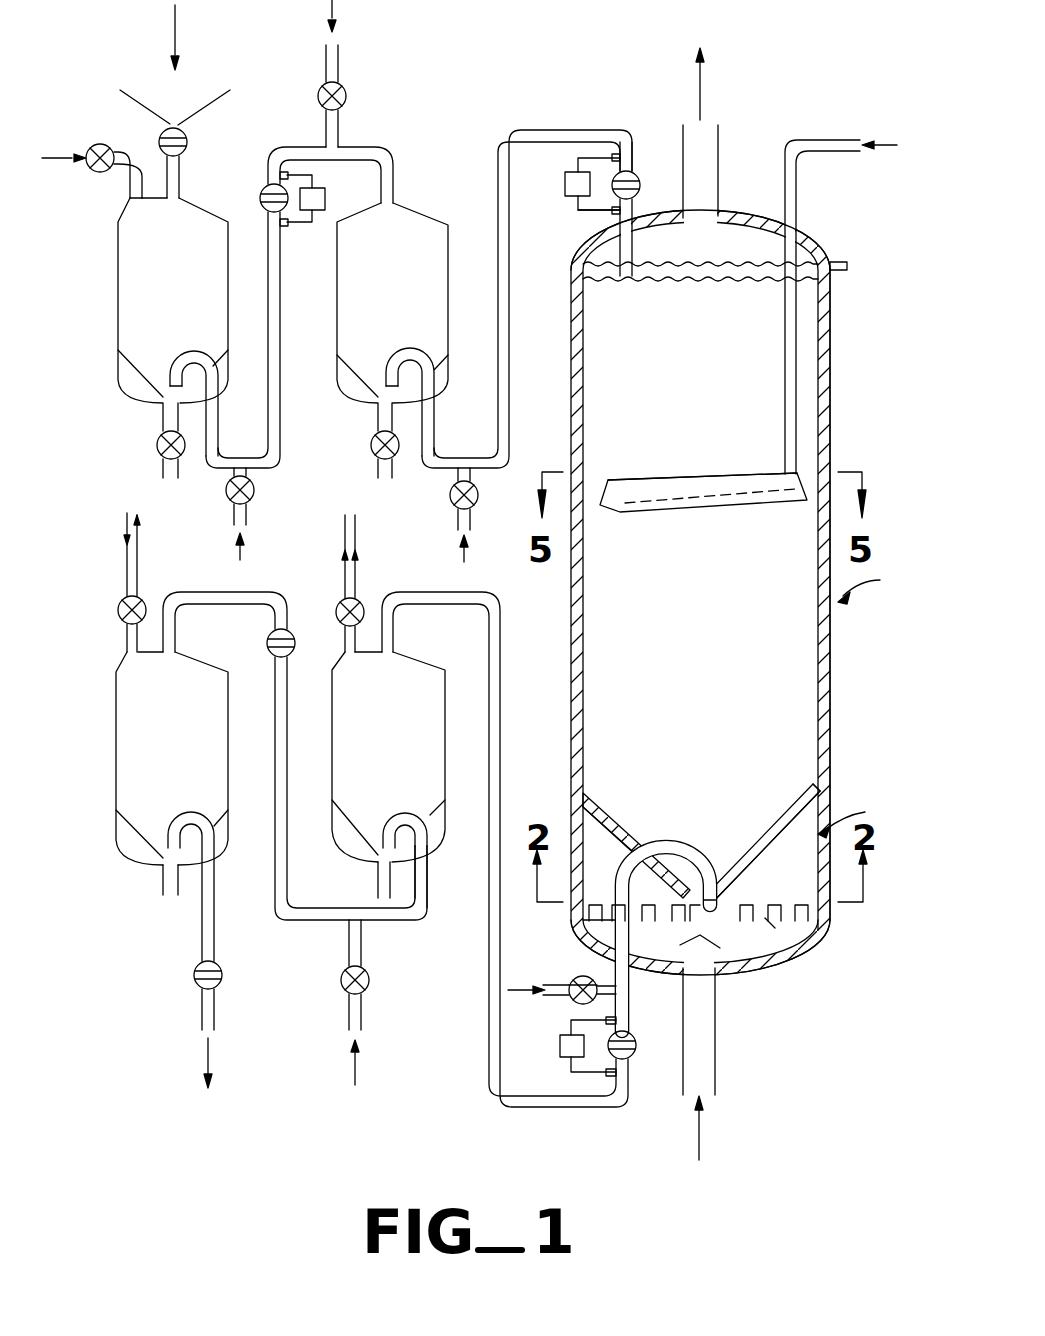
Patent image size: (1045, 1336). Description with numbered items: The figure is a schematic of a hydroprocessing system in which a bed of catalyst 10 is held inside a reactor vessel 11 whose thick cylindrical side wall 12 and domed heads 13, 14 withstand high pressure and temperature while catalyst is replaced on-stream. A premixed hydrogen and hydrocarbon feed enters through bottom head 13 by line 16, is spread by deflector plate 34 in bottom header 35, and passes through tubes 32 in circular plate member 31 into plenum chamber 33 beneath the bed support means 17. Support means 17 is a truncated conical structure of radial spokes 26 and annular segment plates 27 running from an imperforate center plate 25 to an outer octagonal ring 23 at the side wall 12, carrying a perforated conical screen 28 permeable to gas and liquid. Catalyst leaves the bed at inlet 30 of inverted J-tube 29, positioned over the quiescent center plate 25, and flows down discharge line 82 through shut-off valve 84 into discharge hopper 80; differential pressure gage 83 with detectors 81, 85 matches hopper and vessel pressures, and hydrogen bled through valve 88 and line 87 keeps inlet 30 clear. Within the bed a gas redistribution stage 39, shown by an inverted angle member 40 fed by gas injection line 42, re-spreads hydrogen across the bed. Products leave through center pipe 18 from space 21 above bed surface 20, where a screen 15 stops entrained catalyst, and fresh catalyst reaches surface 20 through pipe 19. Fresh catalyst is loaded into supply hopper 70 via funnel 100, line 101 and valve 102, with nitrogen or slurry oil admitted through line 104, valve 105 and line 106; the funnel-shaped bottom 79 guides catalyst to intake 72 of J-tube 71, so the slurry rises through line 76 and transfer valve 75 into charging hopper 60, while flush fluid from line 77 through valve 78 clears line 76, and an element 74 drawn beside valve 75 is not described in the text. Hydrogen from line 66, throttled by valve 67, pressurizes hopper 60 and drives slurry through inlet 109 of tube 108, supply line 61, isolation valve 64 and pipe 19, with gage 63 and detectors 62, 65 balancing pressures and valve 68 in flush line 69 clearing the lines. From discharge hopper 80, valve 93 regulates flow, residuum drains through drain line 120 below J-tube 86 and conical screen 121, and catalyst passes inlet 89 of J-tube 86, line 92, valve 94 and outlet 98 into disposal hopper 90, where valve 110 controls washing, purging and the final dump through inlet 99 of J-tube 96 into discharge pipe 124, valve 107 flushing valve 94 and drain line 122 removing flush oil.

The catalyst bed 10 is at (718, 645).
The reactor vessel 11 is at (875, 582).
The cylindrical side wall 12 is at (832, 672).
The bottom head 13 is at (765, 975).
The domed head 14 is at (815, 237).
The screen 15 is at (737, 268).
The feed line 16 is at (720, 1050).
The bed support means 17 is at (854, 812).
The center pipe 18 is at (722, 148).
The catalyst addition pipe 19 is at (633, 244).
The bed surface 20 is at (676, 284).
The disengaging space 21 is at (725, 253).
The outer octagonal ring 23 is at (820, 805).
The imperforate center plate 25 is at (695, 918).
The radial spoke members 26 is at (778, 860).
The segment plates 27 is at (598, 812).
The perforated screen 28 is at (770, 835).
The inverted J-tube 29 is at (655, 848).
The J-tube inlet 30 is at (709, 888).
The circular plate member 31 is at (818, 940).
The tubes 32 is at (778, 922).
The plenum chamber 33 is at (620, 871).
The deflector plate 34 is at (722, 953).
The bottom header 35 is at (665, 953).
The gas redistribution stage 39 is at (748, 470).
The inverted shed 40 is at (645, 478).
The gas injection line 42 is at (800, 190).
The charging hopper 60 is at (420, 210).
The supply line 61 is at (547, 128).
The pressure detector 62 is at (618, 140).
The differential pressure gage 63 is at (565, 178).
The isolation valve 64 is at (638, 176).
The pressure detector 65 is at (615, 212).
The hydrogen line 66 is at (340, 68).
The hydrogen valve 67 is at (348, 96).
The flush valve 68 is at (450, 497).
The flush line 69 is at (470, 516).
The supply hopper 70 is at (118, 292).
The J-tube 71 is at (188, 360).
The J-tube inlet 72 is at (168, 382).
The controller 74 is at (325, 200).
The transfer valve 75 is at (266, 215).
The transfer line 76 is at (280, 300).
The flush fluid line 77 is at (246, 515).
The flush valve 78 is at (226, 497).
The funnel-shaped bottom 79 is at (122, 372).
The discharge hopper 80 is at (448, 712).
The pressure detector 81 is at (571, 1023).
The discharge line 82 is at (502, 708).
The differential pressure gage 83 is at (560, 1055).
The transfer valve 84 is at (636, 1038).
The pressure detector 85 is at (600, 1076).
The J-tube 86 is at (402, 815).
The flush line 87 is at (578, 976).
The bleed valve 88 is at (560, 998).
The J-tube inlet 89 is at (372, 840).
The disposal hopper 90 is at (116, 705).
The transfer line 92 is at (287, 760).
The flow control valve 93 is at (340, 600).
The transfer valve 94 is at (267, 636).
The J-tube 96 is at (188, 815).
The discharge outlet 98 is at (168, 655).
The J-tube inlet 99 is at (160, 845).
The funnel 100 is at (217, 97).
The charging line 101 is at (182, 170).
The charging valve 102 is at (188, 135).
The nitrogen line 104 is at (93, 144).
The nitrogen valve 105 is at (93, 183).
The inlet line 106 is at (128, 205).
The flush valve 107 is at (369, 985).
The tube 108 is at (404, 356).
The tube inlet 109 is at (388, 400).
The control valve 110 is at (120, 618).
The drain line 120 is at (378, 888).
The conical screen 121 is at (430, 830).
The drain line 122 is at (160, 888).
The discharge pipe 124 is at (198, 935).